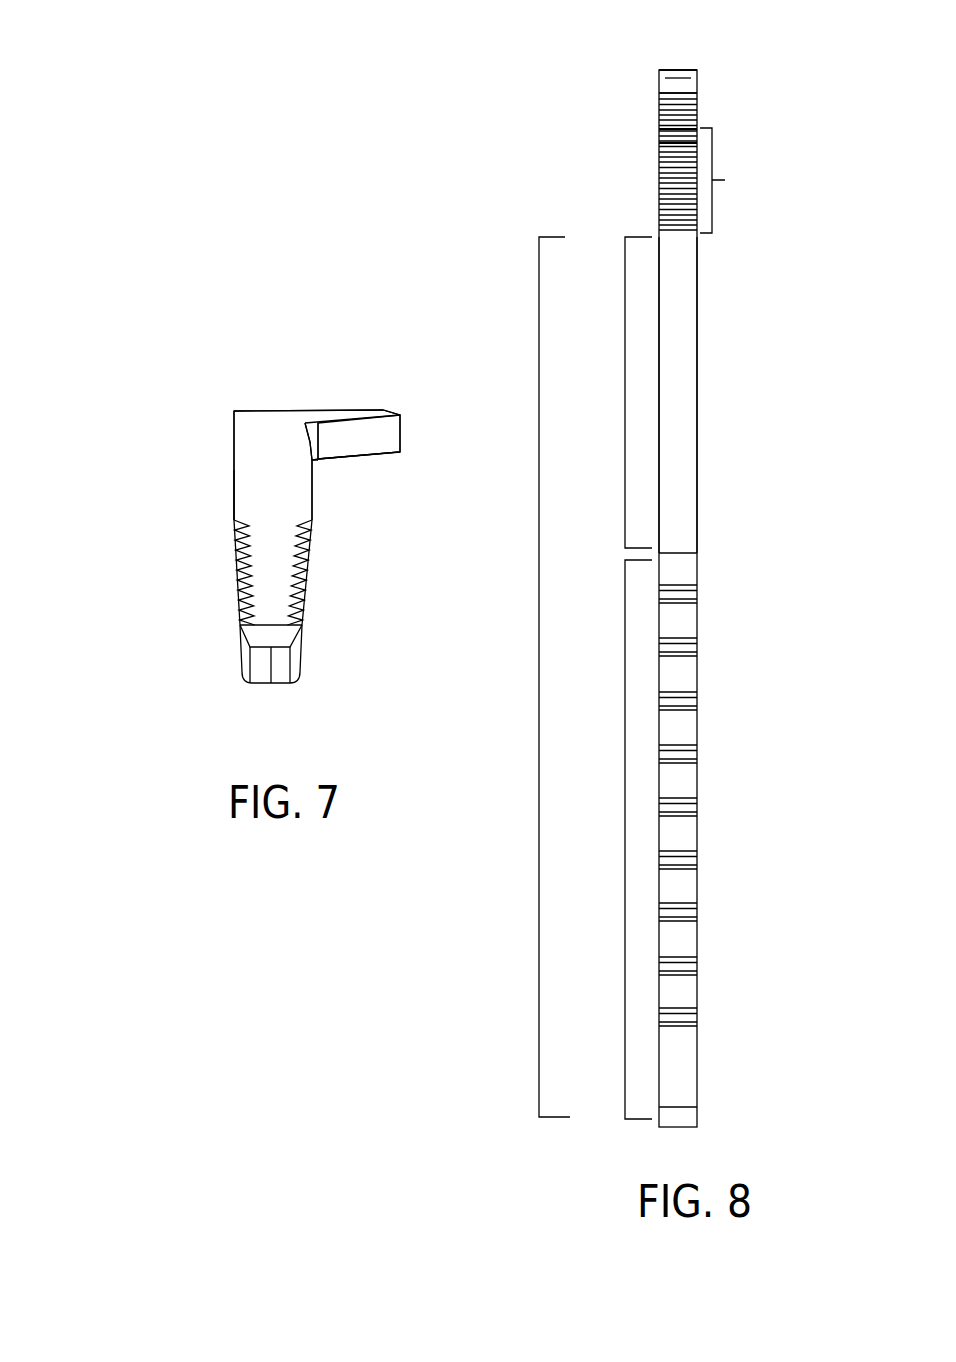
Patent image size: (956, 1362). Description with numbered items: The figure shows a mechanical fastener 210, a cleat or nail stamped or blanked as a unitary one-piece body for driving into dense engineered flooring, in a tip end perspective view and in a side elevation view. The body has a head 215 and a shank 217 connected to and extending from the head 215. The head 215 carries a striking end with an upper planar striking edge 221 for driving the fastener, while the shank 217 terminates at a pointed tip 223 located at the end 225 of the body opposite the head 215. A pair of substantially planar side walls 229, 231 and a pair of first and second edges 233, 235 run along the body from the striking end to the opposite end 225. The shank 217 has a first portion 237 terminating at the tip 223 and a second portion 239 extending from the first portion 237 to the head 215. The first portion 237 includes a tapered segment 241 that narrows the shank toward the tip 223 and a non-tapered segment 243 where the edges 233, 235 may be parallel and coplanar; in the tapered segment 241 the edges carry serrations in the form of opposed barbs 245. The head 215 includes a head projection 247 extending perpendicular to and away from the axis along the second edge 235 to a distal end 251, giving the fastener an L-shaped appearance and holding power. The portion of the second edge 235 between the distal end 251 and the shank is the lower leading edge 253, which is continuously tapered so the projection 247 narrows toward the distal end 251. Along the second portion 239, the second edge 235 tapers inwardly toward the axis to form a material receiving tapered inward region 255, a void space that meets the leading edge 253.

In FIG. 7, the mechanical fastener 210 is at (256, 529).
In FIG. 8, the mechanical fastener 210 is at (612, 564).
In FIG. 7, the head 215 is at (280, 418).
In FIG. 8, the head 215 is at (658, 80).
In FIG. 7, the shank 217 is at (250, 452).
In FIG. 8, the striking edge 221 is at (680, 70).
In FIG. 7, the pointed tip 223 is at (258, 672).
In FIG. 8, the pointed tip 223 is at (687, 1125).
In FIG. 7, the end of body opposite head 225 is at (270, 692).
In FIG. 8, the planar side wall 229 is at (658, 148).
In FIG. 8, the planar side wall 231 is at (698, 405).
In FIG. 7, the first edge 233 is at (233, 482).
In FIG. 7, the second edge 235 is at (313, 505).
In FIG. 8, the second edge 235 is at (682, 353).
In FIG. 8, the first portion of shank 237 is at (530, 677).
In FIG. 8, the second portion of shank 239 is at (738, 180).
In FIG. 8, the tapered segment 241 is at (625, 893).
In FIG. 8, the non-tapered segment 243 is at (625, 392).
In FIG. 7, the barb 245 is at (237, 575).
In FIG. 8, the barb 245 is at (680, 848).
In FIG. 7, the head projection 247 is at (323, 413).
In FIG. 8, the head projection 247 is at (683, 82).
In FIG. 7, the distal end of head projection 251 is at (402, 434).
In FIG. 8, the distal end of head projection 251 is at (680, 92).
In FIG. 7, the lower leading edge 253 is at (363, 447).
In FIG. 8, the lower leading edge 253 is at (680, 110).
In FIG. 7, the material receiving tapered inward region 255 is at (313, 460).